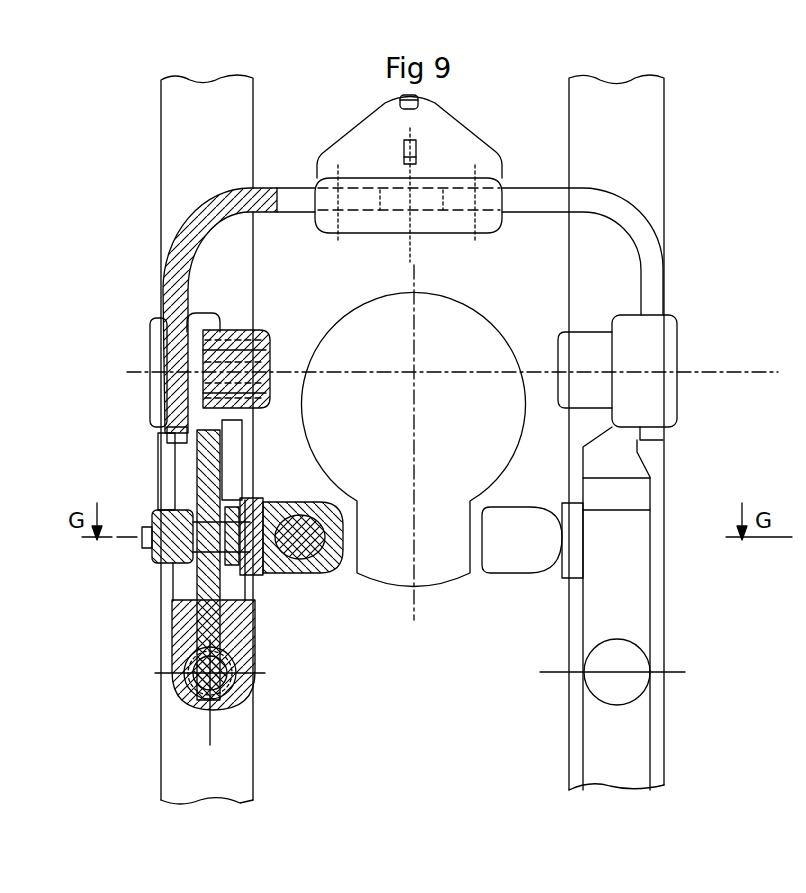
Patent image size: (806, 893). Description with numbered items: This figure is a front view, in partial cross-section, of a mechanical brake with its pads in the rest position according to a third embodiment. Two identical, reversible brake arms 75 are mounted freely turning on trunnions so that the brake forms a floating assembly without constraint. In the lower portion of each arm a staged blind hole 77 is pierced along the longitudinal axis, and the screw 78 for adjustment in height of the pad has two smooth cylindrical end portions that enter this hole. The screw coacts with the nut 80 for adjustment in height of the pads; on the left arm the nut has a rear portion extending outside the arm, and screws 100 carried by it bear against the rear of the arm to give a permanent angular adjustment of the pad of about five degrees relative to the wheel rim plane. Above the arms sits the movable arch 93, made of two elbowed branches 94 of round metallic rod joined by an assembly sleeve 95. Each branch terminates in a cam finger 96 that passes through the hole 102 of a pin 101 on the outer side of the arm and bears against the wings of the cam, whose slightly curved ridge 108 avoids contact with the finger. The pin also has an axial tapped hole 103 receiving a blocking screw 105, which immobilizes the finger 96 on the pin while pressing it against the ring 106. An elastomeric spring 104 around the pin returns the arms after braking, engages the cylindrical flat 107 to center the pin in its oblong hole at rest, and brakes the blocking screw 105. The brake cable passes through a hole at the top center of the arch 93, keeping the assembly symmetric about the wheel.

The brake arm 75 is at (673, 587).
The staged blind hole 77 is at (217, 708).
The screw for adjustment in height of the pad 78 is at (225, 598).
The nut for adjustment in height of the pads 80 is at (170, 550).
The movable arch 93 is at (532, 135).
The elbowed branch 94 is at (195, 318).
The assembly sleeve 95 is at (360, 200).
The cam finger 96 is at (175, 445).
The screw 100 is at (147, 552).
The pin 101 is at (160, 370).
The hole 102 is at (177, 390).
The tapped hole 103 is at (267, 348).
The elastomeric spring 104 is at (265, 407).
The blocking screw 105 is at (190, 325).
The ring 106 is at (270, 408).
The cylindrical flat 107 is at (190, 337).
The ridge 108 is at (178, 300).